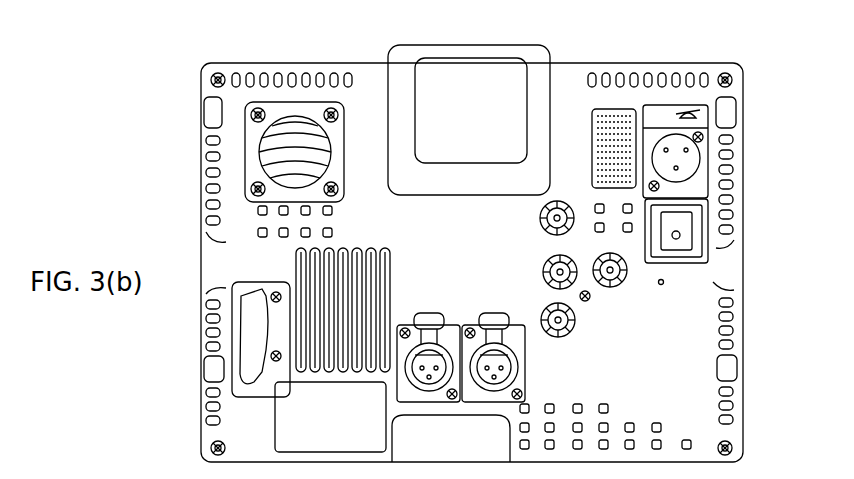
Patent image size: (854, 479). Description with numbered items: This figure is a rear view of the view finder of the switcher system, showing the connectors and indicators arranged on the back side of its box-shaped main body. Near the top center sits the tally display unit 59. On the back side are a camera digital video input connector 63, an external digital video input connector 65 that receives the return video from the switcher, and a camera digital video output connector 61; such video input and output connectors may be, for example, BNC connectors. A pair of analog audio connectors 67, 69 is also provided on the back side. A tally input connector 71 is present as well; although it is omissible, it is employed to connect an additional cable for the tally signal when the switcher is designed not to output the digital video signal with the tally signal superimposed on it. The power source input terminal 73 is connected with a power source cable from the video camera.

The tally display unit 59 is at (468, 70).
The camera digital video output connector 61 is at (540, 226).
The camera digital video input connector 63 is at (543, 282).
The external digital video input connector 65 is at (573, 328).
The analog audio connector 67 is at (490, 314).
The analog audio connector 69 is at (424, 314).
The tally input connector 71 is at (620, 286).
The power source input terminal 73 is at (700, 158).